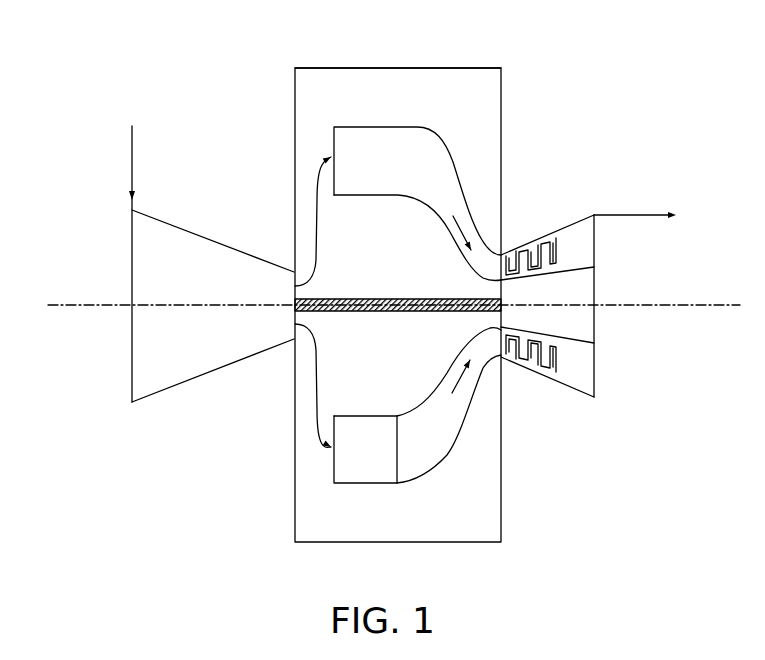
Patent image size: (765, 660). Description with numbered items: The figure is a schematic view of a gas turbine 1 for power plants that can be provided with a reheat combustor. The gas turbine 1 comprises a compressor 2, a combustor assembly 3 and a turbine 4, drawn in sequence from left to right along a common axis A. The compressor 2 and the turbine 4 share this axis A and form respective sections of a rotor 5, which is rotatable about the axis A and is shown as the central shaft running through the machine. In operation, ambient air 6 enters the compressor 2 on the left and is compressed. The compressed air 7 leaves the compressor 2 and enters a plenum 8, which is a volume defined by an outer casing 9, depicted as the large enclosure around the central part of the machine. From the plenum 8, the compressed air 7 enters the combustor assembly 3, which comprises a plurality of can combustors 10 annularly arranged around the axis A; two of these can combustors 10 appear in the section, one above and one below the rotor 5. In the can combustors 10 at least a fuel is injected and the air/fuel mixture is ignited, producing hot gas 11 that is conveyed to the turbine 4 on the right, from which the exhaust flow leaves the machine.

The gas turbine 1 is at (232, 436).
The compressor 2 is at (146, 362).
The combustor assembly 3 is at (447, 144).
The turbine 4 is at (580, 320).
The rotor 5 is at (391, 311).
The ambient air 6 is at (132, 161).
The compressed air 7 is at (327, 258).
The plenum 8 is at (352, 88).
The outer casing 9 is at (420, 68).
The can combustors 10 is at (476, 202).
The hot gas 11 is at (470, 225).
The axis A is at (80, 304).